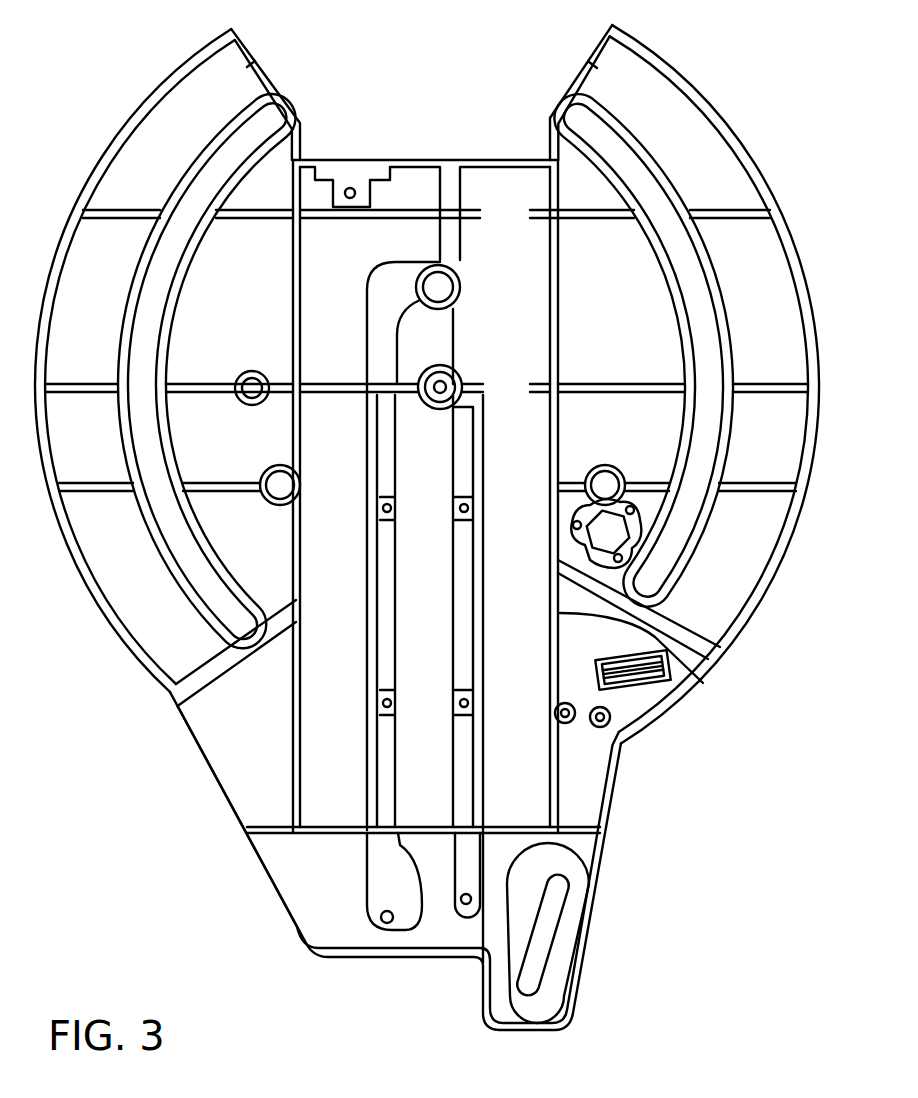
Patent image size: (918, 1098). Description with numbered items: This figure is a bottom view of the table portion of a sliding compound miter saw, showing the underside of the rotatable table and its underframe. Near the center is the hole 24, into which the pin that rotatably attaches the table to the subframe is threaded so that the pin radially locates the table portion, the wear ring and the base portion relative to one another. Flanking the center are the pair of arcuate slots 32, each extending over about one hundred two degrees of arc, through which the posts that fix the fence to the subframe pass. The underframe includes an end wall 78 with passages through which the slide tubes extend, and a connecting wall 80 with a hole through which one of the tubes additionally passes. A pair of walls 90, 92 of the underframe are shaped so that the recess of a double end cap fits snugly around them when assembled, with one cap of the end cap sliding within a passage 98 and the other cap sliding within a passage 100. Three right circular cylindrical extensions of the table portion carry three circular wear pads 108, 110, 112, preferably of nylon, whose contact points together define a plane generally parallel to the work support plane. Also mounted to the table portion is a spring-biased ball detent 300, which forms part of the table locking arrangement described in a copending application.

The hole 24 is at (455, 384).
The arcuate slots 32 is at (150, 277).
The end wall 78 is at (423, 160).
The connecting wall 80 is at (320, 372).
The wall 90 is at (480, 552).
The wall 92 is at (377, 603).
The passage 98 is at (687, 663).
The passage 100 is at (320, 727).
The wear pad 108 is at (263, 497).
The wear pad 110 is at (460, 273).
The wear pad 112 is at (607, 466).
The spring-biased ball detent 300 is at (238, 382).